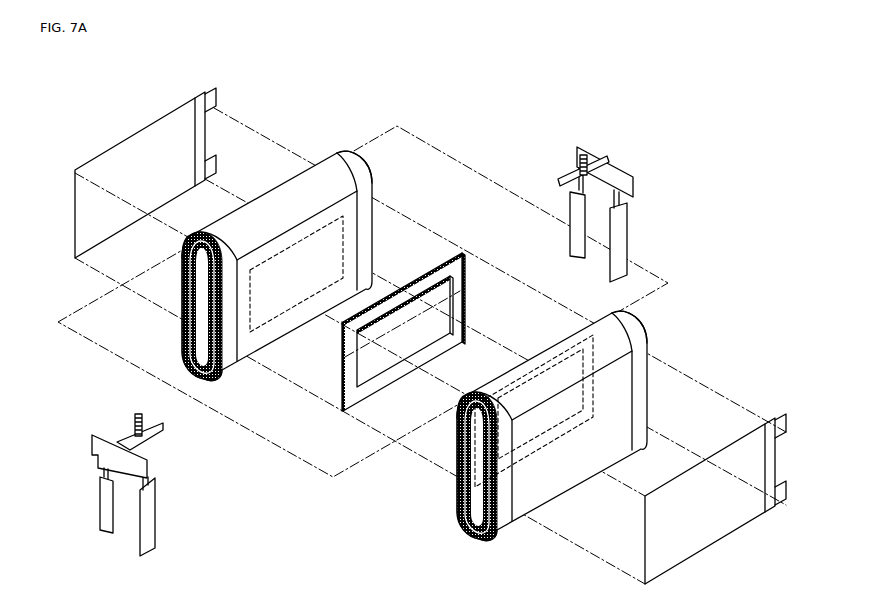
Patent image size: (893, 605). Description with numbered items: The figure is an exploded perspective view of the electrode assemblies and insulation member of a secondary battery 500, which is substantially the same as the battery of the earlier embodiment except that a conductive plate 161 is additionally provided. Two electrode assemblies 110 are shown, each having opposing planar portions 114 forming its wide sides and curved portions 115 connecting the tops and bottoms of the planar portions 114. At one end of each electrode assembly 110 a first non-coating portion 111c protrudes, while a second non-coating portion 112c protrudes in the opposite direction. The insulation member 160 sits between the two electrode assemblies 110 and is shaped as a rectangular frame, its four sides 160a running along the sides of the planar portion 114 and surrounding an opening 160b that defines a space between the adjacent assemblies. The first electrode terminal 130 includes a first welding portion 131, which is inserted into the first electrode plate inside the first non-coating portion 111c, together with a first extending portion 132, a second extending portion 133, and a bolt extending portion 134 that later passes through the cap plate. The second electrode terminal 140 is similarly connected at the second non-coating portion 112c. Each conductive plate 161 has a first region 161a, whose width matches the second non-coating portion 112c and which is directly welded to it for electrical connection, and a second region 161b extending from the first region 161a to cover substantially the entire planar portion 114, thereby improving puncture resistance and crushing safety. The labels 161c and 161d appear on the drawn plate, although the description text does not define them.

The secondary battery 500 is at (669, 144).
The electrode assembly 110 is at (440, 339).
The first non-coating portion 111c is at (229, 365).
The second non-coating portion 112c is at (344, 152).
The planar portion 114 is at (282, 297).
The curved portion 115 is at (277, 208).
The first electrode terminal 130 is at (105, 472).
The first welding portion 131 is at (105, 507).
The first extending portion 132 is at (90, 448).
The second extending portion 133 is at (122, 438).
The bolt extending portion 134 is at (135, 417).
The second electrode terminal 140 is at (585, 152).
The insulation member 160 is at (396, 306).
The side 160a is at (342, 352).
The opening 160b is at (357, 367).
The conductive plate 161 is at (453, 327).
The first region 161a is at (218, 99).
The second region 161b is at (204, 96).
The plate body of end plate 161c is at (108, 234).
The side flange of end plate 161d is at (208, 146).